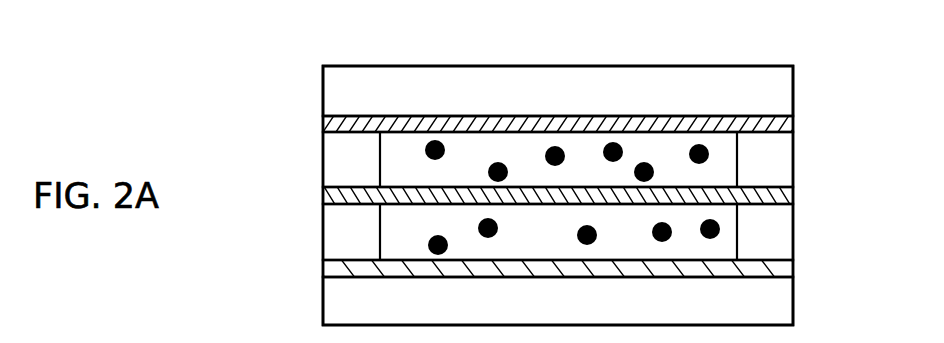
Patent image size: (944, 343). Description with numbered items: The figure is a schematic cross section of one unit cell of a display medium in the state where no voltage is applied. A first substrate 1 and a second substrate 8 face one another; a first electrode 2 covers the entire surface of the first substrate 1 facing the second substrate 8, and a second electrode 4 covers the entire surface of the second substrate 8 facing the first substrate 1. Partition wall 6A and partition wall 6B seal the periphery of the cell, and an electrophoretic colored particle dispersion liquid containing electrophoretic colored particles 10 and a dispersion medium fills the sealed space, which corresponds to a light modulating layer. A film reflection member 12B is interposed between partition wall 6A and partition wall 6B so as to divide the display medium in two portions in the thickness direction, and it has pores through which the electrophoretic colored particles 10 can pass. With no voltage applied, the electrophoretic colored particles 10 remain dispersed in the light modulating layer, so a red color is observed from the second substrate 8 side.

The first substrate 1 is at (787, 297).
The first electrode 2 is at (787, 266).
The second electrode 4 is at (787, 123).
The partition wall 6A is at (787, 234).
The partition wall 6B is at (787, 166).
The second substrate 8 is at (787, 89).
The electrophoretic colored particles 10 is at (612, 143).
The film reflection member 12B is at (325, 193).